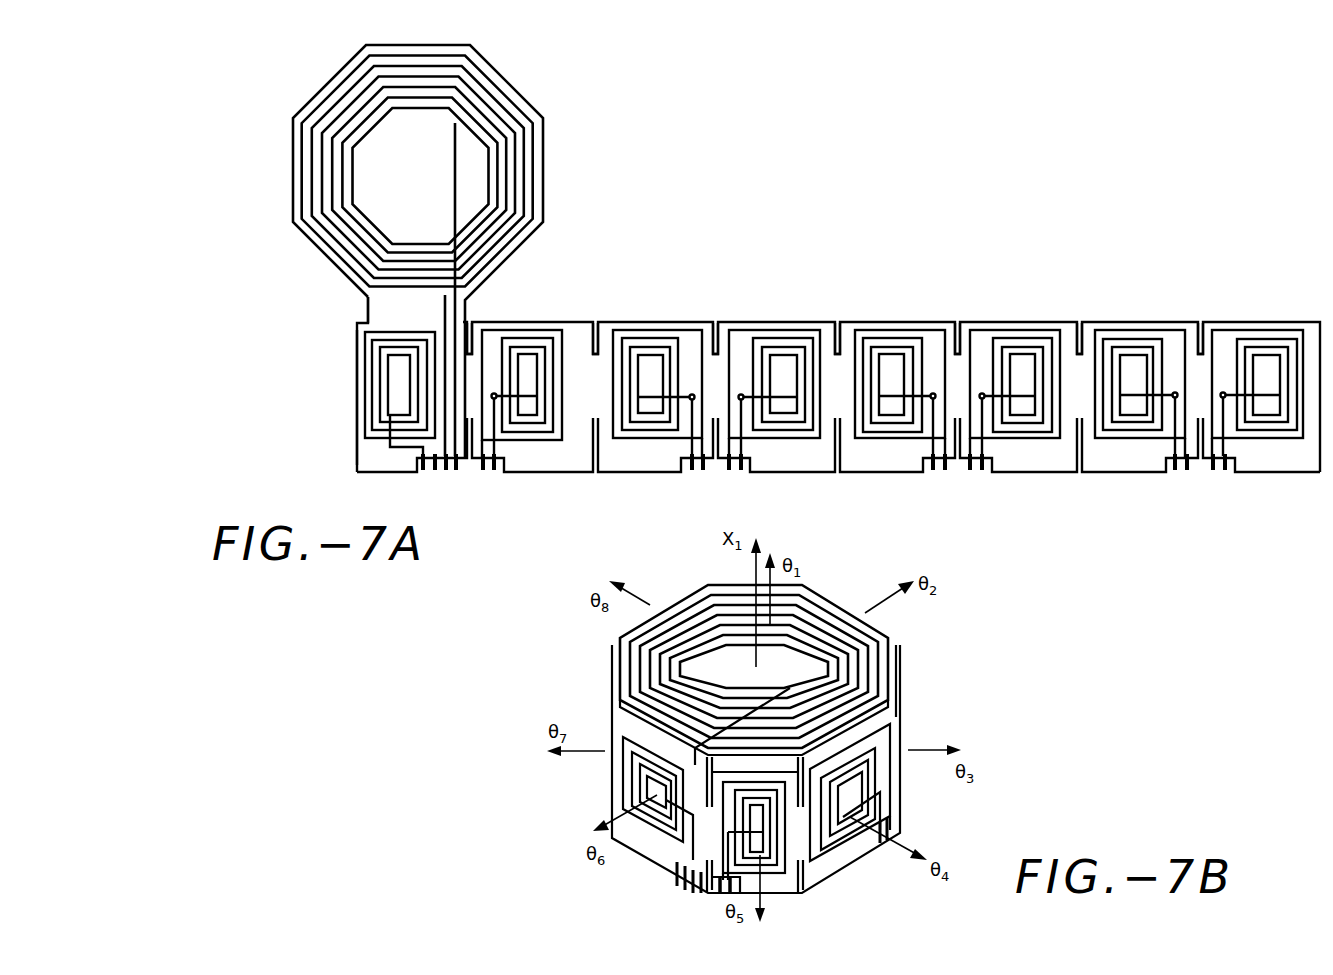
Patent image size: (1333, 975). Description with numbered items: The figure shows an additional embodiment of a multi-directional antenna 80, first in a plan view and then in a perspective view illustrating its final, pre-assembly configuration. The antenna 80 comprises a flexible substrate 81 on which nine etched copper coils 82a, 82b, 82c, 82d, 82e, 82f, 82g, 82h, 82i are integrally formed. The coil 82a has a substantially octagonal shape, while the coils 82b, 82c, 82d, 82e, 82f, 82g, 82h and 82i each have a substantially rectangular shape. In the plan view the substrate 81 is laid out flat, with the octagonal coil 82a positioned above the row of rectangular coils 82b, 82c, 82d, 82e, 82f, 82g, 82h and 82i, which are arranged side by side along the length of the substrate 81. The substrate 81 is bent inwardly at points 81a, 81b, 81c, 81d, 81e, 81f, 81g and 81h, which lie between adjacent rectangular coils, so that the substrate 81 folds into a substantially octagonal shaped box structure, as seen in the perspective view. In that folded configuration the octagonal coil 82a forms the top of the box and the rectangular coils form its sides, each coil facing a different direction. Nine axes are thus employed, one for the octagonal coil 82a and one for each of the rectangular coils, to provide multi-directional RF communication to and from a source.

In FIG. 7A, the antenna 80 is at (596, 237).
In FIG. 7A, the flexible substrate 81 is at (357, 401).
In FIG. 7A, the bend point 81a is at (366, 316).
In FIG. 7A, the bend point 81b is at (474, 327).
In FIG. 7A, the bend point 81c is at (600, 327).
In FIG. 7A, the bend point 81d is at (720, 327).
In FIG. 7A, the bend point 81e is at (842, 327).
In FIG. 7A, the bend point 81f is at (962, 327).
In FIG. 7A, the bend point 81g is at (1084, 327).
In FIG. 7A, the bend point 81h is at (1205, 327).
In FIG. 7A, the octagonal coil 82a is at (543, 146).
In FIG. 7B, the octagonal coil 82a is at (887, 661).
In FIG. 7A, the rectangular coil 82b is at (378, 440).
In FIG. 7B, the rectangular coil 82b is at (877, 773).
In FIG. 7A, the rectangular coil 82c is at (540, 442).
In FIG. 7B, the rectangular coil 82c is at (782, 876).
In FIG. 7A, the rectangular coil 82d is at (655, 442).
In FIG. 7B, the rectangular coil 82d is at (648, 842).
In FIG. 7A, the rectangular coil 82e is at (780, 442).
In FIG. 7A, the rectangular coil 82f is at (895, 442).
In FIG. 7A, the rectangular coil 82g is at (1020, 442).
In FIG. 7A, the rectangular coil 82h is at (1135, 442).
In FIG. 7A, the rectangular coil 82i is at (1272, 442).